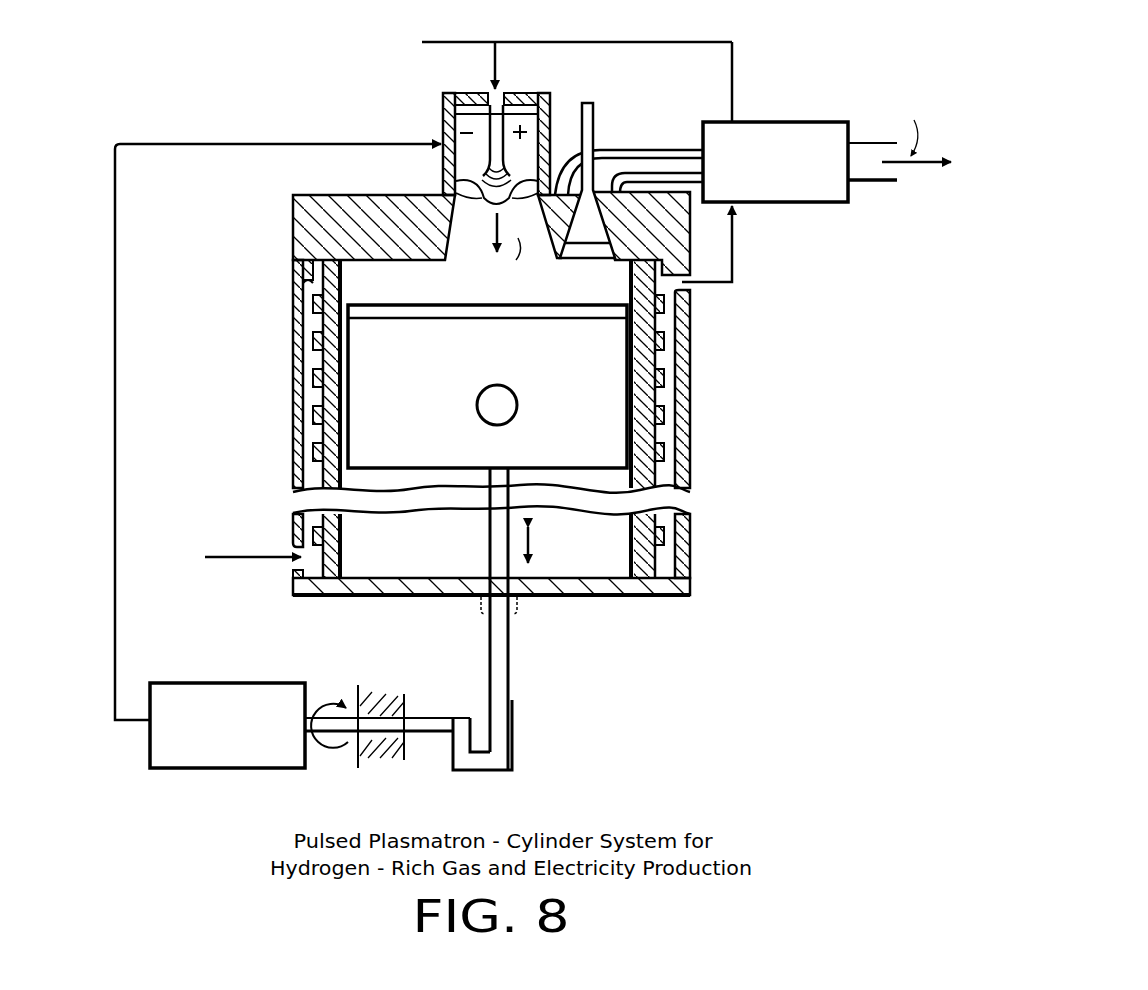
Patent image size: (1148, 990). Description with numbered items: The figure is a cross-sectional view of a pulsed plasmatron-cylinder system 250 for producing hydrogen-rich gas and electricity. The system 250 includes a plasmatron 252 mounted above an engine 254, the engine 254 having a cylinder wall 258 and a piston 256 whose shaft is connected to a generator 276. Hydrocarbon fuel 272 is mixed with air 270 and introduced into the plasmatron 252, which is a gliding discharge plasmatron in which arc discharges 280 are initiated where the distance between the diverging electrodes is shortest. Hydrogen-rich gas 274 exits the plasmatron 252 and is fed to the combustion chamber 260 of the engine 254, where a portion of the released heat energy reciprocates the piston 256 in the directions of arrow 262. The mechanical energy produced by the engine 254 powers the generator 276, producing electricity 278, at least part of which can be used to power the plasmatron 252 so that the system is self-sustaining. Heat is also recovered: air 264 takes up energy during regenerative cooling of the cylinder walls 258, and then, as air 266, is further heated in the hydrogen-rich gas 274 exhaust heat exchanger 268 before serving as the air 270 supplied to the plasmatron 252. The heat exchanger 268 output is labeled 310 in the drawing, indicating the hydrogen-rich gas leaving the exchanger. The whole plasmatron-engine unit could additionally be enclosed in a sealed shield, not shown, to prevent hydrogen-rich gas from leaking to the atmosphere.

The system 250 is at (258, 40).
The plasmatron 252 is at (443, 116).
The engine 254 is at (707, 380).
The piston 256 is at (633, 437).
The cylinder wall 258 is at (293, 386).
The combustion chamber 260 is at (314, 279).
The arrow 262 is at (541, 543).
The air 264 is at (232, 565).
The air 266 is at (740, 240).
The heat exchanger 268 is at (758, 120).
The air 270 is at (693, 40).
The hydrocarbon fuel 272 is at (447, 44).
The hydrogen-rich gas 274 is at (497, 223).
The generator 276 is at (221, 682).
The electricity 278 is at (146, 152).
The arc discharges 280 is at (443, 175).
The hydrogen-rich gas output 310 is at (918, 170).